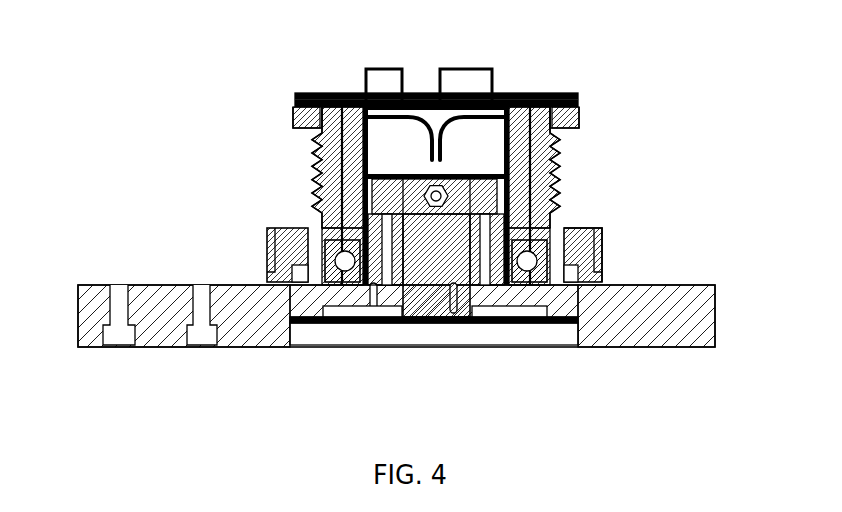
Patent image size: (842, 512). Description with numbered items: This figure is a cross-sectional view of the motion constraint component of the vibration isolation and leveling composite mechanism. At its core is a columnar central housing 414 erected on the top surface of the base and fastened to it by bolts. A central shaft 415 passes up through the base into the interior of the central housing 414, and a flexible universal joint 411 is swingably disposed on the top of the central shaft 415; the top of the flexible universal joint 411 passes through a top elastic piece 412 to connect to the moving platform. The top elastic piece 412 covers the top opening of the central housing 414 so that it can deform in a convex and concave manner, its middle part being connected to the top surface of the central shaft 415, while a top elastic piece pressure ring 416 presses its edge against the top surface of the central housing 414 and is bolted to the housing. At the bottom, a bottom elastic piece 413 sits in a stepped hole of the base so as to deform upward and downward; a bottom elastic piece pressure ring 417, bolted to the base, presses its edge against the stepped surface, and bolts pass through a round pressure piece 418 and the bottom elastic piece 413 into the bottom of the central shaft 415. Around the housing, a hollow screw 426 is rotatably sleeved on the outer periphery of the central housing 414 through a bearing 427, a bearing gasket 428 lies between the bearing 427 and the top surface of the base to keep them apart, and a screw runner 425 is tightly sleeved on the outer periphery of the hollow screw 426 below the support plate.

The flexible universal joint 411 is at (400, 163).
The top elastic piece 412 is at (320, 93).
The bottom elastic piece 413 is at (300, 272).
The central housing 414 is at (313, 182).
The central shaft 415 is at (318, 222).
The top elastic piece pressure ring 416 is at (345, 102).
The bottom elastic piece pressure ring 417 is at (368, 320).
The round pressure piece 418 is at (430, 322).
The screw runner 425 is at (599, 233).
The hollow screw 426 is at (540, 173).
The bearing 427 is at (527, 257).
The bearing gasket 428 is at (583, 250).